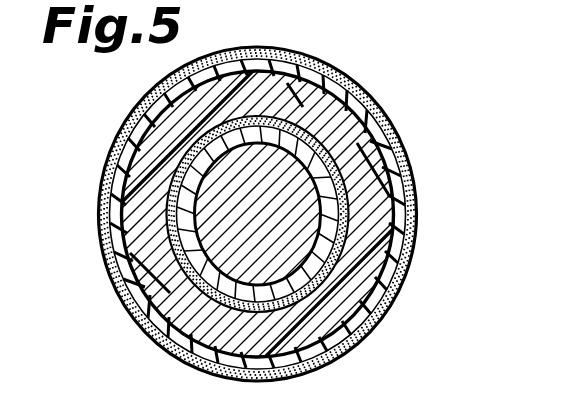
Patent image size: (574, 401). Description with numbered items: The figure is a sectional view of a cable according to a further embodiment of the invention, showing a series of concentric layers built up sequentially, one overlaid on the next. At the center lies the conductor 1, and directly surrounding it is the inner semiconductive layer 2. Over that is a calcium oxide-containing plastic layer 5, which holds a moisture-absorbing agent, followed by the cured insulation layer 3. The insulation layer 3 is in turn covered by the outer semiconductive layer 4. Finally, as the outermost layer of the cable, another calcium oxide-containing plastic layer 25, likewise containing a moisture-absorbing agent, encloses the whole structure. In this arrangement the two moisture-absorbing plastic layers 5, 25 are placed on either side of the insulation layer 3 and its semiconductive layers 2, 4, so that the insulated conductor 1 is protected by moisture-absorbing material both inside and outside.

The conductor 1 is at (295, 172).
The inner semiconductive layer 2 is at (330, 195).
The plastic layer 5 is at (343, 213).
The insulation layer 3 is at (357, 270).
The outer semiconductive layer 4 is at (372, 302).
The plastic layer 25 is at (352, 338).